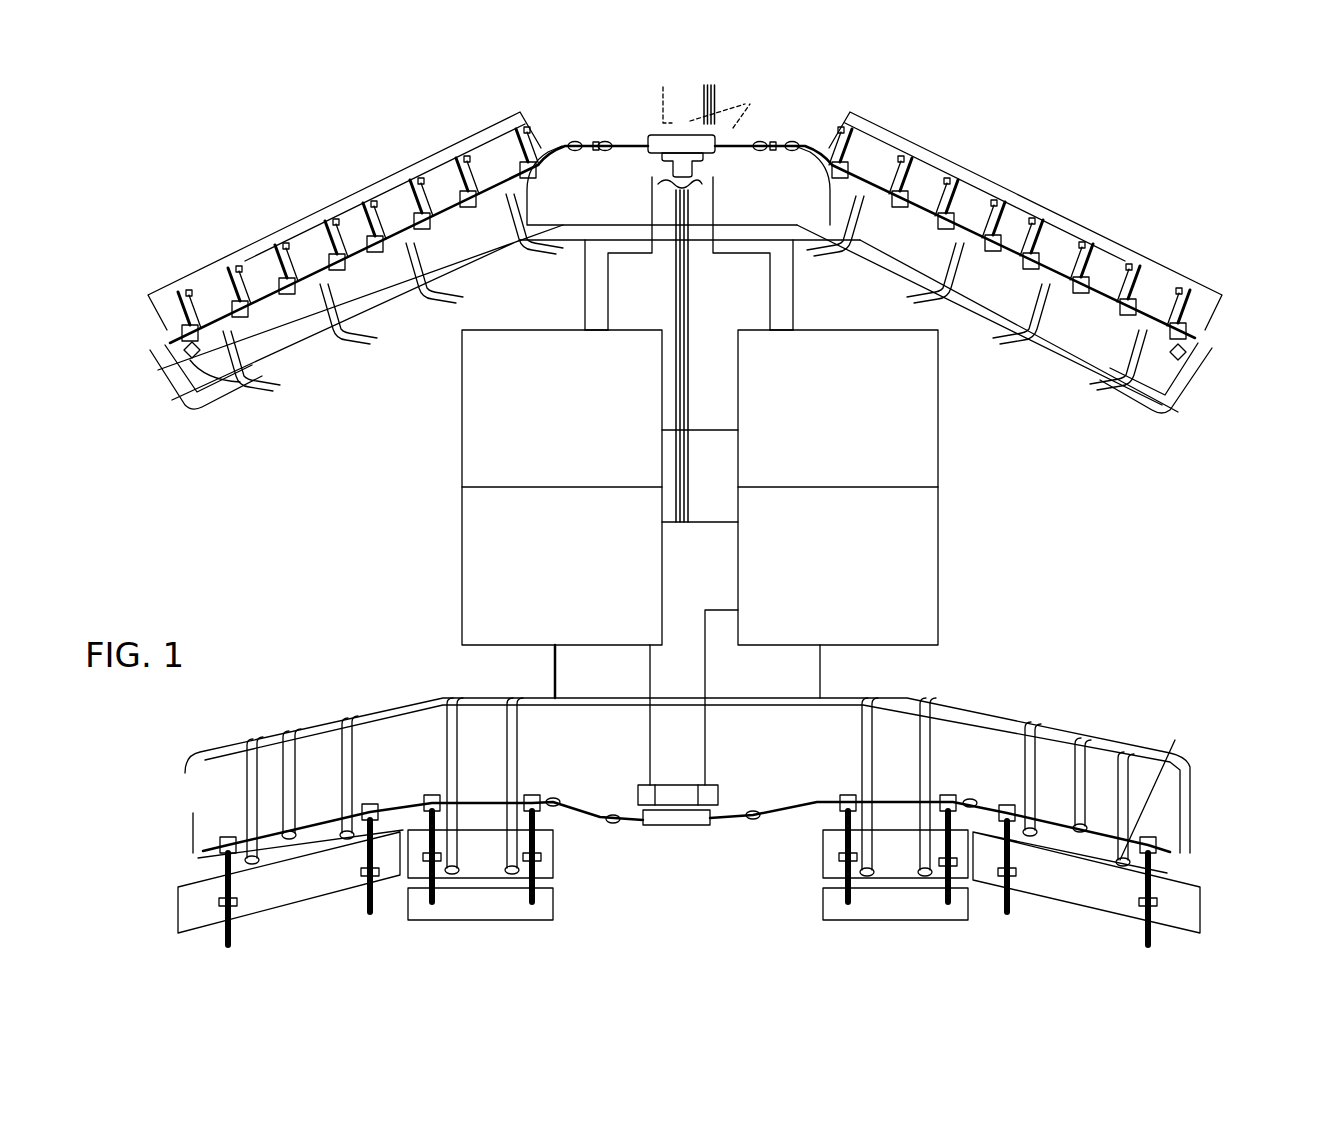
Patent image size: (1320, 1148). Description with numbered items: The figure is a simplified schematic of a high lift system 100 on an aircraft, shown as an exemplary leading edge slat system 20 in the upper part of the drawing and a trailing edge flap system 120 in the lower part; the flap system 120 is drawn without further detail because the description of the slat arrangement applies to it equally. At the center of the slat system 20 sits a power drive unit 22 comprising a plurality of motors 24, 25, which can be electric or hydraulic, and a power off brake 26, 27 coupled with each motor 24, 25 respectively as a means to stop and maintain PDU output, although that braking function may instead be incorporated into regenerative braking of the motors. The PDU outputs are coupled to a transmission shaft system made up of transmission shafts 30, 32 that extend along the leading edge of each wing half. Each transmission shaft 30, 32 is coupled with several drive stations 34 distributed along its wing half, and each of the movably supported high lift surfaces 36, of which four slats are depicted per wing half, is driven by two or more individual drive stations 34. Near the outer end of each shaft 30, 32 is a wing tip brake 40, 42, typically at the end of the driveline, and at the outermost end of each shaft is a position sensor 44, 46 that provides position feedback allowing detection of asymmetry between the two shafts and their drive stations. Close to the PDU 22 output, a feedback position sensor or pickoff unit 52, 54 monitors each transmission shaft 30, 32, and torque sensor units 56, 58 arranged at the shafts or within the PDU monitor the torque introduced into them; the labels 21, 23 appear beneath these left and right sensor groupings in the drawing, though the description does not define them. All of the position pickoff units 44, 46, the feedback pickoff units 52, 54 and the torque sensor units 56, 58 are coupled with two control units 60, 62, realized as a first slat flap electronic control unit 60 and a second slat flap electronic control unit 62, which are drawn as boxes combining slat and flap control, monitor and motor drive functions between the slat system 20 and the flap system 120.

The high lift system 100 is at (1188, 152).
The leading edge slat system 20 is at (1198, 240).
The trailing edge flap system 120 is at (1207, 855).
The power drive unit 22 is at (702, 134).
The motor 24 is at (583, 124).
The power off brake 26 is at (613, 124).
The motor 25 is at (777, 124).
The power off brake 27 is at (800, 124).
The transmission shaft 30 is at (549, 142).
The transmission shaft 32 is at (826, 150).
The drive station 34 is at (368, 216).
The high lift surface 36 is at (480, 122).
The wing tip brake 40 is at (214, 335).
The wing tip brake 42 is at (1160, 326).
The position sensor 44 is at (151, 352).
The position sensor 46 is at (1216, 357).
The feedback position sensor 52 is at (605, 191).
The torque sensor unit 56 is at (643, 175).
The left sensor channel 21 is at (640, 219).
The feedback position sensor 54 is at (721, 175).
The torque sensor unit 58 is at (800, 191).
The right sensor channel 23 is at (750, 219).
The first slat flap electronic control unit 60 is at (457, 470).
The second slat flap electronic control unit 62 is at (968, 500).